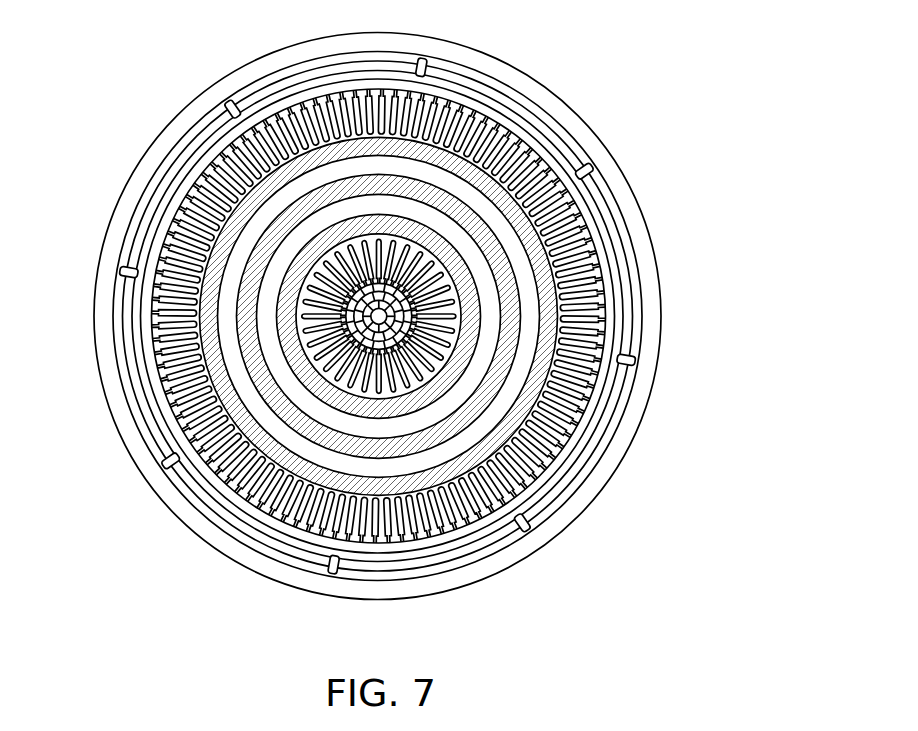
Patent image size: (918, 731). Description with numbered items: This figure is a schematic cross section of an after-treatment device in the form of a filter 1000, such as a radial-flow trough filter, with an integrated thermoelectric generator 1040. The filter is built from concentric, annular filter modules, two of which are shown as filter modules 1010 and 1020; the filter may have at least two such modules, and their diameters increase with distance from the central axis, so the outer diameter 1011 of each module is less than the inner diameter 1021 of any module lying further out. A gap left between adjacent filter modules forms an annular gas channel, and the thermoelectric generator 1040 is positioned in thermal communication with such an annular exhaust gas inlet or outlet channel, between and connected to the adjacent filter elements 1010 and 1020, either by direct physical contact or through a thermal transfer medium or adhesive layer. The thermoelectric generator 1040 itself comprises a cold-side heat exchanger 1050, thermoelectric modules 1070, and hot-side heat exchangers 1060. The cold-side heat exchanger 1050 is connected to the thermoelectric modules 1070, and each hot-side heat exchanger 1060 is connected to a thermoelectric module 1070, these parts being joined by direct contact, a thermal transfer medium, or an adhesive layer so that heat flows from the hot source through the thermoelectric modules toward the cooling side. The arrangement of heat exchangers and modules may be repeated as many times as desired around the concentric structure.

The filter 1000 is at (688, 93).
The concentric annular filter module 1010 is at (431, 286).
The outer diameter 1011 is at (463, 318).
The concentric annular filter module 1020 is at (639, 391).
The inner diameter 1021 is at (530, 430).
The thermoelectric generator 1040 is at (308, 307).
The cold-side heat exchanger 1050 is at (277, 397).
The hot-side heat exchanger 1060 is at (203, 301).
The thermoelectric module 1070 is at (398, 420).